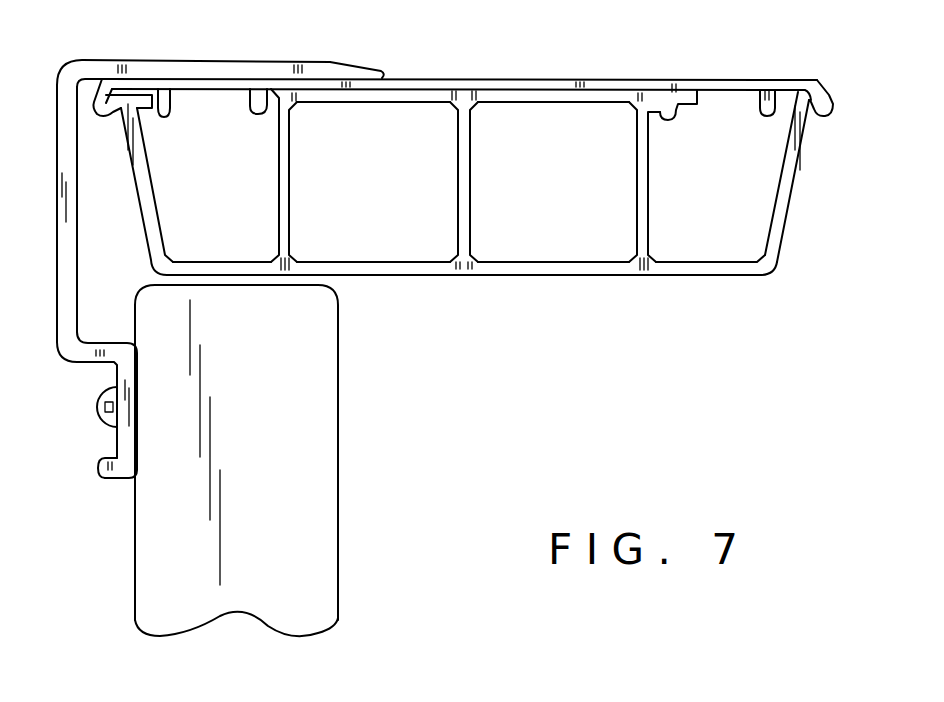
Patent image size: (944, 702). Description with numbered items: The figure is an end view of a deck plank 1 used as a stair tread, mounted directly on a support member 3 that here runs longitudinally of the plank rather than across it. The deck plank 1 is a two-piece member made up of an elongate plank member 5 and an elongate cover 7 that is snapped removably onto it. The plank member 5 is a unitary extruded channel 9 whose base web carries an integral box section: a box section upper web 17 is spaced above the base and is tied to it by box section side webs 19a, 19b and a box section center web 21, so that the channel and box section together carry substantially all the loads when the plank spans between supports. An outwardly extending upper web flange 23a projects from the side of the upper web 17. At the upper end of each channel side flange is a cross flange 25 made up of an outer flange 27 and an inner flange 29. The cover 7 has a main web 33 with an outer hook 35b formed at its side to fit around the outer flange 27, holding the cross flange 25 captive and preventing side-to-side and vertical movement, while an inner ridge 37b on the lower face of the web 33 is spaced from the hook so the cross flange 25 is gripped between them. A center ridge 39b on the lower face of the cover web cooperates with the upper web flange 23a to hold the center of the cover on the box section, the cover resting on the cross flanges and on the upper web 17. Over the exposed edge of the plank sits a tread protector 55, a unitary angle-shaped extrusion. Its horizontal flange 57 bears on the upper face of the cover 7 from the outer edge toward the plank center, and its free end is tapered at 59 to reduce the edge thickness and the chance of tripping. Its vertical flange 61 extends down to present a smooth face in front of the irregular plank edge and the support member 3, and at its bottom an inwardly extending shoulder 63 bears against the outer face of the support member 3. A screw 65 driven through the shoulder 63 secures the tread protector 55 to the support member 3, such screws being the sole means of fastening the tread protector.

The deck plank 1 is at (814, 60).
The support member 3 is at (346, 500).
The plank member 5 is at (810, 222).
The cover 7 is at (600, 72).
The channel 9 is at (580, 284).
The box section upper web 17 is at (526, 97).
The box section side web 19a is at (292, 176).
The box section side web 19b is at (650, 190).
The box section center web 21 is at (472, 210).
The upper web flange 23a is at (253, 108).
The cross flange 25 is at (801, 128).
The outer flange 27 is at (810, 114).
The inner flange 29 is at (780, 111).
The main web 33 is at (466, 82).
The outer hook 35b is at (827, 94).
The inner ridge 37b is at (762, 108).
The center ridge 39b is at (698, 103).
The tread protector 55 is at (50, 272).
The horizontal flange 57 is at (214, 68).
The tapered free end 59 is at (352, 66).
The vertical flange 61 is at (66, 202).
The shoulder 63 is at (115, 470).
The screw 65 is at (105, 408).